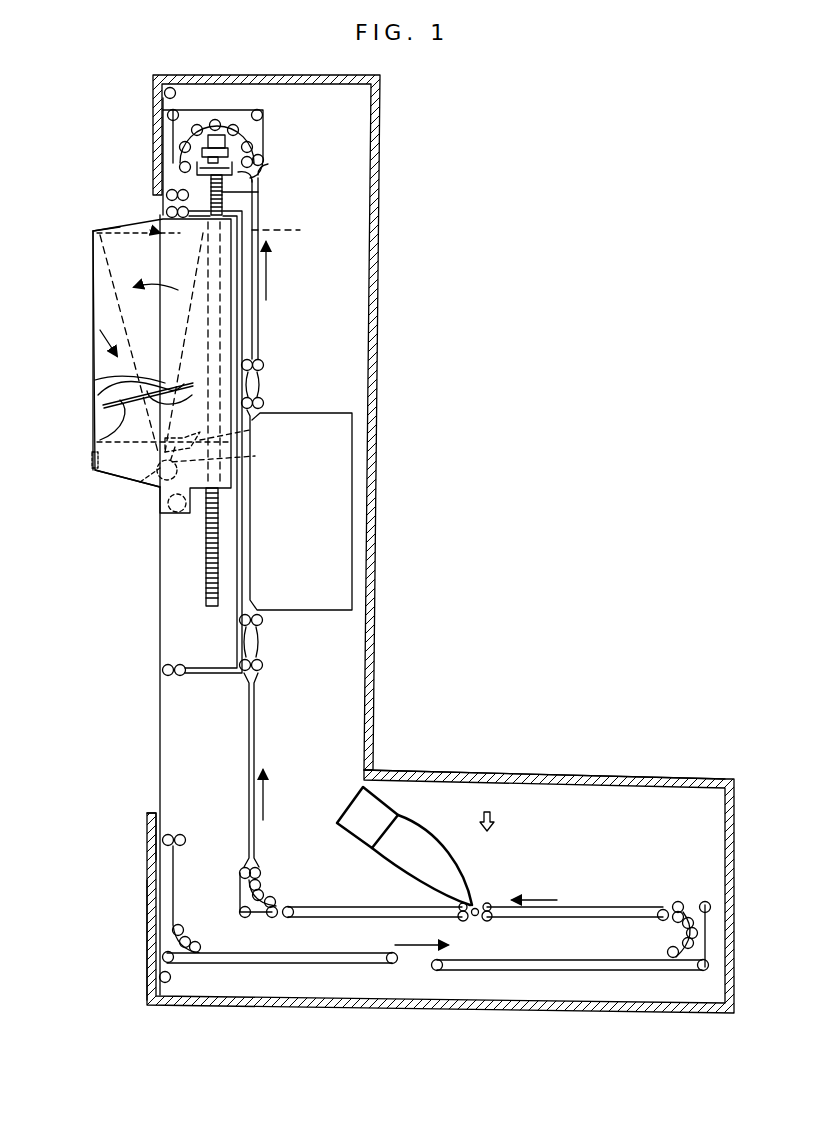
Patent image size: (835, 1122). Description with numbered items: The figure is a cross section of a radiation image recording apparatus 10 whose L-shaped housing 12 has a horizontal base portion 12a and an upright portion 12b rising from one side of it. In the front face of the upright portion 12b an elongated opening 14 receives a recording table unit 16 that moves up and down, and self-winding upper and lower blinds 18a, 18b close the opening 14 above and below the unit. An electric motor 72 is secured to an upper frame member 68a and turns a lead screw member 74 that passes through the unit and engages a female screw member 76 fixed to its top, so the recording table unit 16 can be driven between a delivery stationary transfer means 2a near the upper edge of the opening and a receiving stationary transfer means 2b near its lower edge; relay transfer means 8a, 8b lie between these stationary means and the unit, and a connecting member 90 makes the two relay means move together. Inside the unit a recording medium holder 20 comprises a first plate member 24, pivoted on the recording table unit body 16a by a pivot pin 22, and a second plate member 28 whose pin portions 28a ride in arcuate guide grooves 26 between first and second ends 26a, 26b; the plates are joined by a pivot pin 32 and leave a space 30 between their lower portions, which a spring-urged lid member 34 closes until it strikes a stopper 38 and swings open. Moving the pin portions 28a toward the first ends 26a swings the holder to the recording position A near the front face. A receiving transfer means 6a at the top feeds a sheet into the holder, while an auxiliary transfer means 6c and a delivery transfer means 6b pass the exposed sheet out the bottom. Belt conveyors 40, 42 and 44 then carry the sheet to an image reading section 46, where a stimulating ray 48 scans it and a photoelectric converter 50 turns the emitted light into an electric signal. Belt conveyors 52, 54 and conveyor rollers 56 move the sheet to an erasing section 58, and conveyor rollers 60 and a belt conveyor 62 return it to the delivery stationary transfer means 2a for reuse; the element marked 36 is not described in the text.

The radiation image recording apparatus 10 is at (422, 140).
The L-shaped housing 12 is at (682, 770).
The horizontal base portion 12a is at (540, 773).
The upright portion 12b is at (147, 920).
The elongated opening 14 is at (150, 813).
The upper blind 18a is at (160, 200).
The lower blind 18b is at (158, 713).
The delivery stationary transfer means 2a is at (172, 188).
The receiving stationary transfer means 2b is at (184, 833).
The relay transfer means 8a is at (168, 212).
The relay transfer means 8b is at (162, 668).
The belt conveyor 62 is at (275, 128).
The electric motor 72 is at (232, 118).
The upper frame member 68a is at (264, 170).
The lead screw member 74 is at (260, 192).
The female screw member 76 is at (290, 228).
The recording table unit 16 is at (105, 490).
The recording table unit body 16a is at (122, 488).
The pivot pin 22 is at (92, 232).
The recording medium holder 20 is at (93, 332).
The receiving transfer means 6a is at (110, 224).
The second plate member 28 is at (156, 264).
The recording position A is at (98, 298).
The first plate member 24 is at (130, 322).
The stopper 38 is at (178, 322).
The first end 26a is at (103, 406).
The second end 26b is at (100, 380).
The pin portions 28a is at (125, 388).
The arcuate guide grooves 26 is at (97, 442).
The pivot pin 32 is at (227, 436).
The lid member 34 is at (230, 456).
The stop 36 is at (92, 463).
The space 30 is at (152, 478).
The delivery transfer means 6b is at (175, 515).
The auxiliary transfer means 6c is at (222, 520).
The connecting member 90 is at (256, 323).
The conveyor rollers 60 is at (264, 401).
The erasing section 58 is at (323, 512).
The conveyor rollers 56 is at (264, 630).
The belt conveyor 40 is at (278, 971).
The belt conveyor 54 is at (240, 898).
The belt conveyor 52 is at (303, 908).
The photoelectric converter 50 is at (355, 832).
The stimulating ray 48 is at (496, 818).
The belt conveyor 44 is at (588, 905).
The image reading section 46 is at (542, 858).
The belt conveyor 42 is at (570, 975).